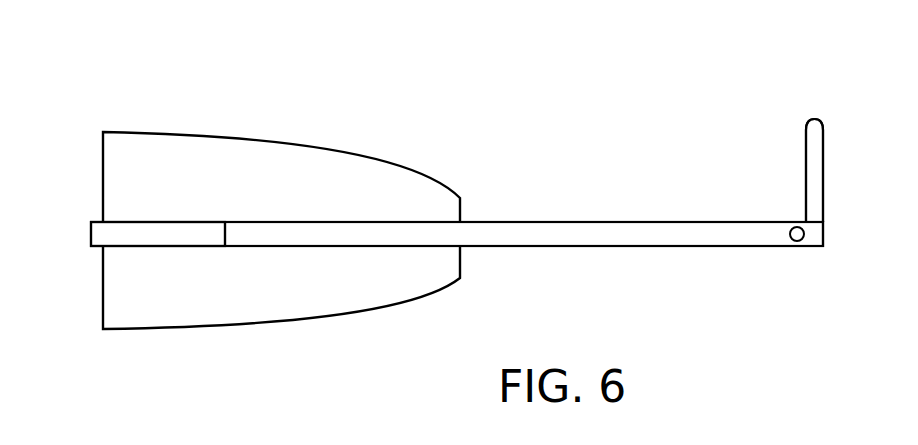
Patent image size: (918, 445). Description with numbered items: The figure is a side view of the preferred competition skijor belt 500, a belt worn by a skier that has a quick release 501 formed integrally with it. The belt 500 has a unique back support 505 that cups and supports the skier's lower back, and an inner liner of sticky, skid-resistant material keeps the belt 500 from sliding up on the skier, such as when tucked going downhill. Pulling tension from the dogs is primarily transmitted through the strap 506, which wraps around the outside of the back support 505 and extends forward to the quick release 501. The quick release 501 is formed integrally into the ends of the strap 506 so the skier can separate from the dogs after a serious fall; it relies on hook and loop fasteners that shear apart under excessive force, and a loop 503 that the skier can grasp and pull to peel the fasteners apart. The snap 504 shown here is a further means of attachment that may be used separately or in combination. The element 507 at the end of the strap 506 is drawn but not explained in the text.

The competition skijor belt 500 is at (630, 51).
The quick release 501 is at (798, 138).
The loop 503 is at (808, 180).
The snap 504 is at (793, 243).
The back support 505 is at (283, 147).
The strap 506 is at (557, 240).
The nock end portion 507 is at (97, 232).